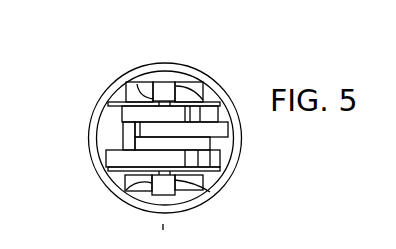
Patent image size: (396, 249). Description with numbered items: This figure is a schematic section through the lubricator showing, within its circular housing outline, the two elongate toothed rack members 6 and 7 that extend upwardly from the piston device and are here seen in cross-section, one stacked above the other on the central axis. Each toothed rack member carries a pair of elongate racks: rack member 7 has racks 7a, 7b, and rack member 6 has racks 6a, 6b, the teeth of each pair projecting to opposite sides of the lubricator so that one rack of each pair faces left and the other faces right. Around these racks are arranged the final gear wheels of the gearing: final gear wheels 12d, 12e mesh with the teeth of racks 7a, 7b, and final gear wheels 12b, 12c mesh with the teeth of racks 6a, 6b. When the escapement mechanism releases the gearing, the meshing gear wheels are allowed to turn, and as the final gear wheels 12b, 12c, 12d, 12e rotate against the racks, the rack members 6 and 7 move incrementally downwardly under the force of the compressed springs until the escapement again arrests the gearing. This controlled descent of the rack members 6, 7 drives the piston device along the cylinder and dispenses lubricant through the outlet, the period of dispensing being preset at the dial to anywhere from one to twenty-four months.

The toothed rack member 6 is at (168, 189).
The rack 6a is at (197, 187).
The rack 6b is at (132, 187).
The toothed rack member 7 is at (165, 88).
The rack 7a is at (195, 95).
The rack 7b is at (142, 88).
The final gear wheel 12b is at (176, 180).
The final gear wheel 12c is at (132, 181).
The final gear wheel 12d is at (217, 93).
The final gear wheel 12e is at (138, 92).